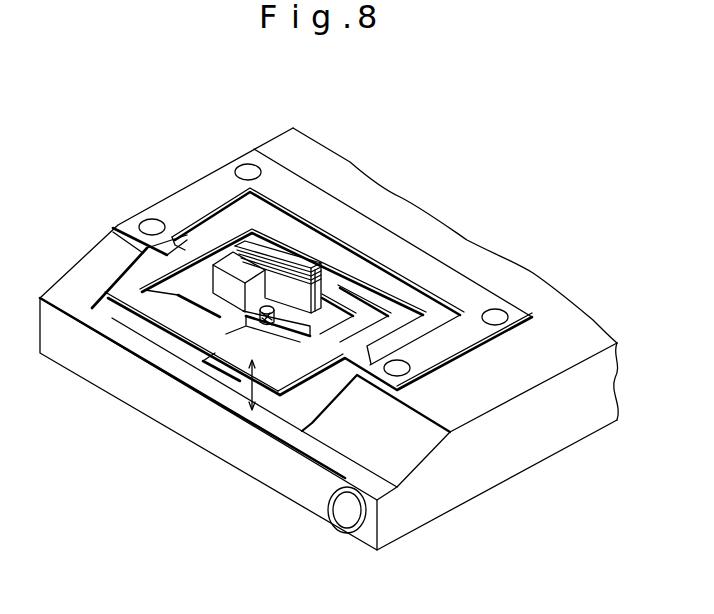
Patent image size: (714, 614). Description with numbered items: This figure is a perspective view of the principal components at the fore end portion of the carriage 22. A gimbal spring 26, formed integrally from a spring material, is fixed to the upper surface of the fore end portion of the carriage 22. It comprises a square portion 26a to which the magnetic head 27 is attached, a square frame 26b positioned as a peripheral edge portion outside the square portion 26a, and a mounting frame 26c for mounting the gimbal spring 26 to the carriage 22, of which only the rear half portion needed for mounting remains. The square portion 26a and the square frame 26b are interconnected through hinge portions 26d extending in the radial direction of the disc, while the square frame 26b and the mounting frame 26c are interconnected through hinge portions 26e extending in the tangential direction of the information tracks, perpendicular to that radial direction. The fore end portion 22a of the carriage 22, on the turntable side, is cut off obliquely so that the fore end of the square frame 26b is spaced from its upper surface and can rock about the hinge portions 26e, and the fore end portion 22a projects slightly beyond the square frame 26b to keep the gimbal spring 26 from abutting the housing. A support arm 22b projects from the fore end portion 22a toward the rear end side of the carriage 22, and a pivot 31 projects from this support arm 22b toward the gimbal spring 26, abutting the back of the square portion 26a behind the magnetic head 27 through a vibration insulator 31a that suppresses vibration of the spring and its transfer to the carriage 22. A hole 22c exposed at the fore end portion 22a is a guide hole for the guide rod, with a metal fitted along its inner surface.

The carriage 22 is at (452, 492).
The fore end portion of the carriage 22a is at (255, 457).
The support arm 22b is at (258, 392).
The hole 22c is at (347, 518).
The gimbal spring 26 is at (127, 288).
The square portion 26a is at (167, 300).
The square frame 26b is at (247, 223).
The mounting frame 26c is at (467, 300).
The hinge portions 26d is at (318, 275).
The hinge portions 26e is at (137, 250).
The magnetic head 27 is at (227, 262).
The pivot 31 is at (300, 262).
The vibration insulator 31a is at (267, 306).